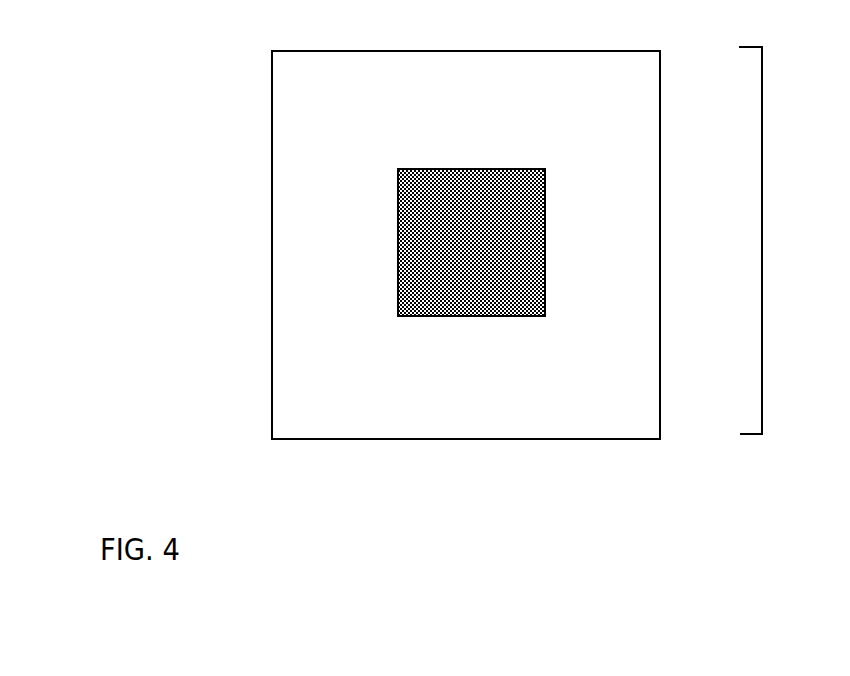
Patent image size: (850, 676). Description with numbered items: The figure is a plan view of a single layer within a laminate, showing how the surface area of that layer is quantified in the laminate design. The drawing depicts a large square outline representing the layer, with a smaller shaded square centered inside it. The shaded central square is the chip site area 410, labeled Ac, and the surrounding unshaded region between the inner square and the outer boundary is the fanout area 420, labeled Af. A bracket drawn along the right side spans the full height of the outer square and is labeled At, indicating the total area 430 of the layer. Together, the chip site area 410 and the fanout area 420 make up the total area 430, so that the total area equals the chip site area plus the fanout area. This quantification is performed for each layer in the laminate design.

The chip site area 410 is at (471, 242).
The fanout area 420 is at (466, 245).
The total area 430 is at (762, 238).